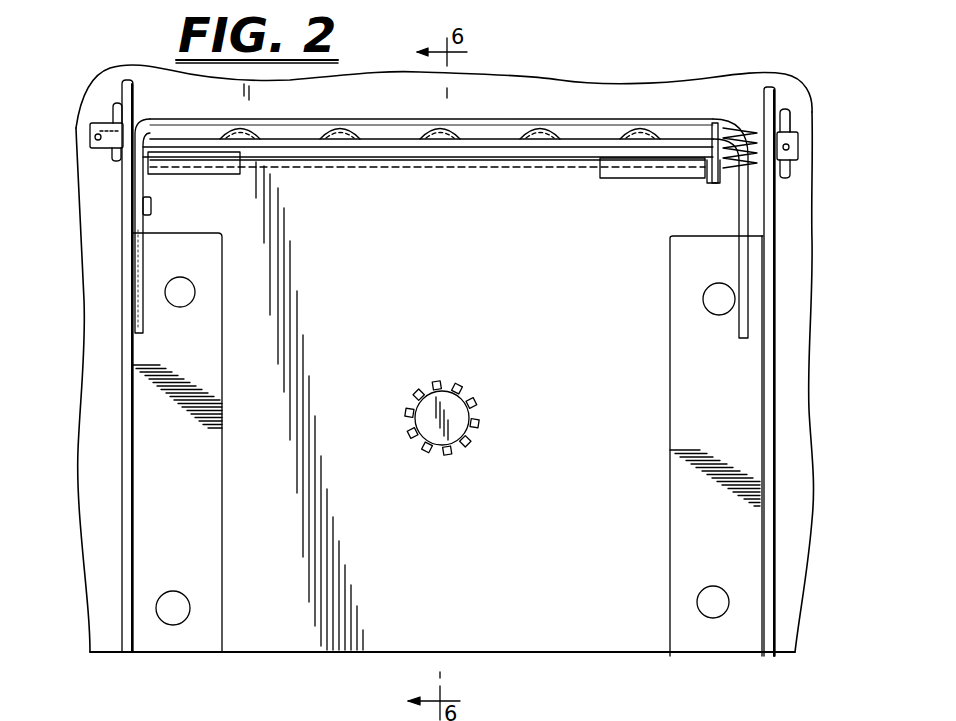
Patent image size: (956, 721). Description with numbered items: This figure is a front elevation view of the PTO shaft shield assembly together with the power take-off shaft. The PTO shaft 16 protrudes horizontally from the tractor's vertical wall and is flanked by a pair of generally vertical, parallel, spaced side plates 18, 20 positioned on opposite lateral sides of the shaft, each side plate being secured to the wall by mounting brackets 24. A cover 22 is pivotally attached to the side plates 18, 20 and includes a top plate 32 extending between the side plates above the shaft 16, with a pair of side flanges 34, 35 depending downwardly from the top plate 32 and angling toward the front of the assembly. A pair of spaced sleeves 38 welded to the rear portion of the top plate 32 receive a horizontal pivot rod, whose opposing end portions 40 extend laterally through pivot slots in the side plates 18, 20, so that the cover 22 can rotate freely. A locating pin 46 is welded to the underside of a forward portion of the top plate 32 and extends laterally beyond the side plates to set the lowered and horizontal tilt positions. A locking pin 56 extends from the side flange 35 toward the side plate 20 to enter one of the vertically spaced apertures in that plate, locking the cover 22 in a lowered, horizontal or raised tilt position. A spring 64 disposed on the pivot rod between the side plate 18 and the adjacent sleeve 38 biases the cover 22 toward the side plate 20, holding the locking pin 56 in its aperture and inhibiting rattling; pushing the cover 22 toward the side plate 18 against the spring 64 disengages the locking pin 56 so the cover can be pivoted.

The PTO shaft 16 is at (458, 420).
The side plate 18 is at (778, 262).
The side plate 20 is at (120, 351).
The cover 22 is at (502, 138).
The mounting bracket 24 is at (214, 372).
The top plate 32 is at (590, 146).
The side flange 34 is at (749, 305).
The side flange 35 is at (132, 275).
The sleeve 38 is at (207, 168).
The end portion 40 is at (113, 152).
The locating pin 46 is at (796, 136).
The locking pin 56 is at (152, 206).
The spring 64 is at (732, 178).